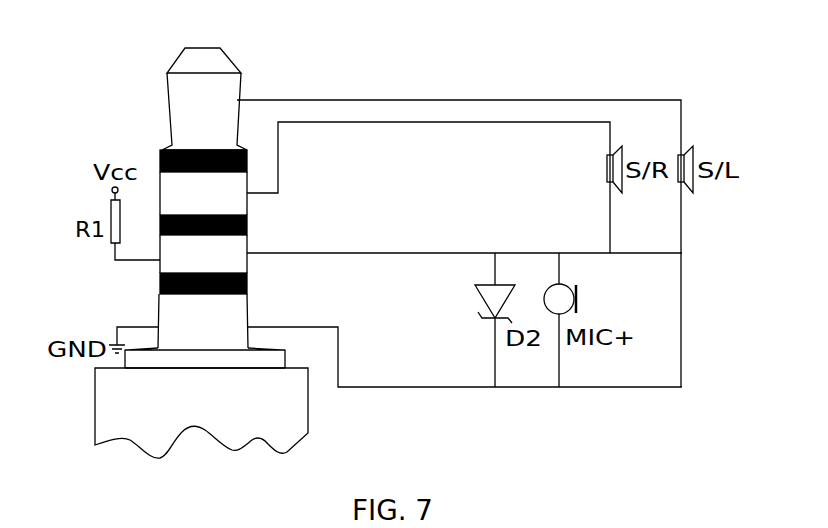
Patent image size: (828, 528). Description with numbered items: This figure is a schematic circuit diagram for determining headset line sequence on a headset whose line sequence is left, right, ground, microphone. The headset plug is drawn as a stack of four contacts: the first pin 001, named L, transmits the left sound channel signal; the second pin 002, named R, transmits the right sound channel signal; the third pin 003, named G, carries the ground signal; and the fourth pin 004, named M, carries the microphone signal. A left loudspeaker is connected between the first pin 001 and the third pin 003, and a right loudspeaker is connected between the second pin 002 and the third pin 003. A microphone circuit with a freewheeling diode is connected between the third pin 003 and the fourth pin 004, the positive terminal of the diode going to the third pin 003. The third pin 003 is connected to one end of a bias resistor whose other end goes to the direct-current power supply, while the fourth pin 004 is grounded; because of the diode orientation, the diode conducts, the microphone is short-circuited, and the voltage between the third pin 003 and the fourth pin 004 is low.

The first pin 001 is at (220, 92).
The second pin 002 is at (176, 195).
The third pin 003 is at (222, 247).
The fourth pin 004 is at (225, 306).